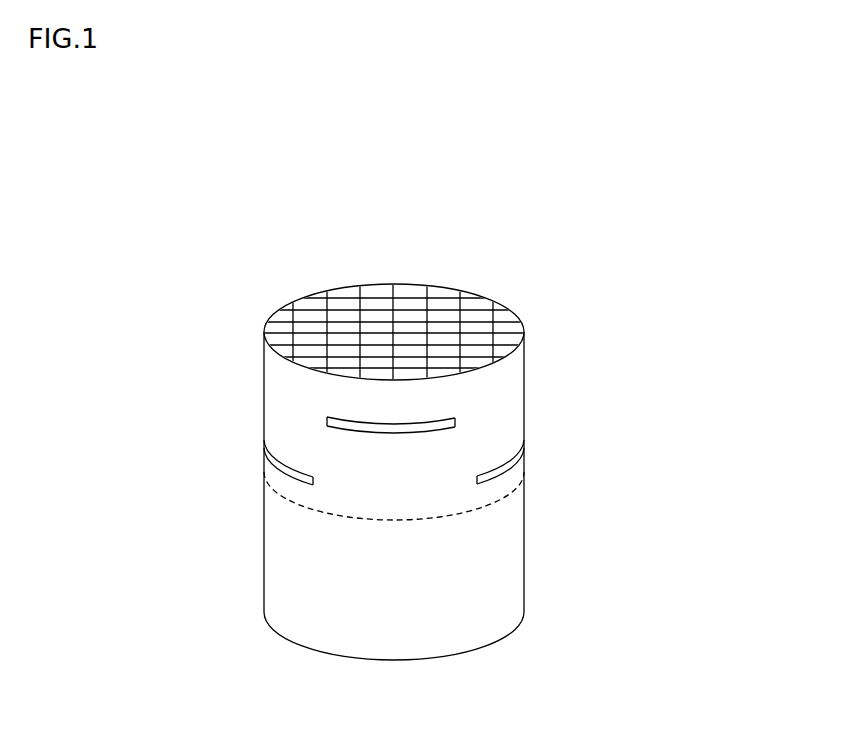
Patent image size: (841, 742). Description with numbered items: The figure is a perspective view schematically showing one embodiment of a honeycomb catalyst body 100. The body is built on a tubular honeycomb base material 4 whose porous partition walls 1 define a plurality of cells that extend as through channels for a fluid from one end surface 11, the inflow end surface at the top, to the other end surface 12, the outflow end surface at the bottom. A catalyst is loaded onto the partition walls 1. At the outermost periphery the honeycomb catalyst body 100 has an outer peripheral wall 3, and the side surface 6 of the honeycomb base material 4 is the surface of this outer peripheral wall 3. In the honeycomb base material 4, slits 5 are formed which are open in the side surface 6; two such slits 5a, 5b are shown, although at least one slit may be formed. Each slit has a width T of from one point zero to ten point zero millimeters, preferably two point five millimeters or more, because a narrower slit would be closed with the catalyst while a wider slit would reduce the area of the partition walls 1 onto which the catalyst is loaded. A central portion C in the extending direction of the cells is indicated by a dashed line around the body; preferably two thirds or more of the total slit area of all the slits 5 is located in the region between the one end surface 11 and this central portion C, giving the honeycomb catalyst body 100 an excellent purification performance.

The honeycomb catalyst body 100 is at (449, 424).
The partition wall 1 is at (357, 297).
The one end surface 11 is at (352, 297).
The outer peripheral wall 3 is at (478, 512).
The honeycomb base material 4 is at (503, 387).
The slit 5 is at (434, 441).
The slit 5a is at (365, 431).
The slit 5b is at (513, 457).
The side surface 6 is at (505, 508).
The the other end surface 12 is at (480, 648).
The width T is at (455, 418).
The central portion C is at (348, 520).